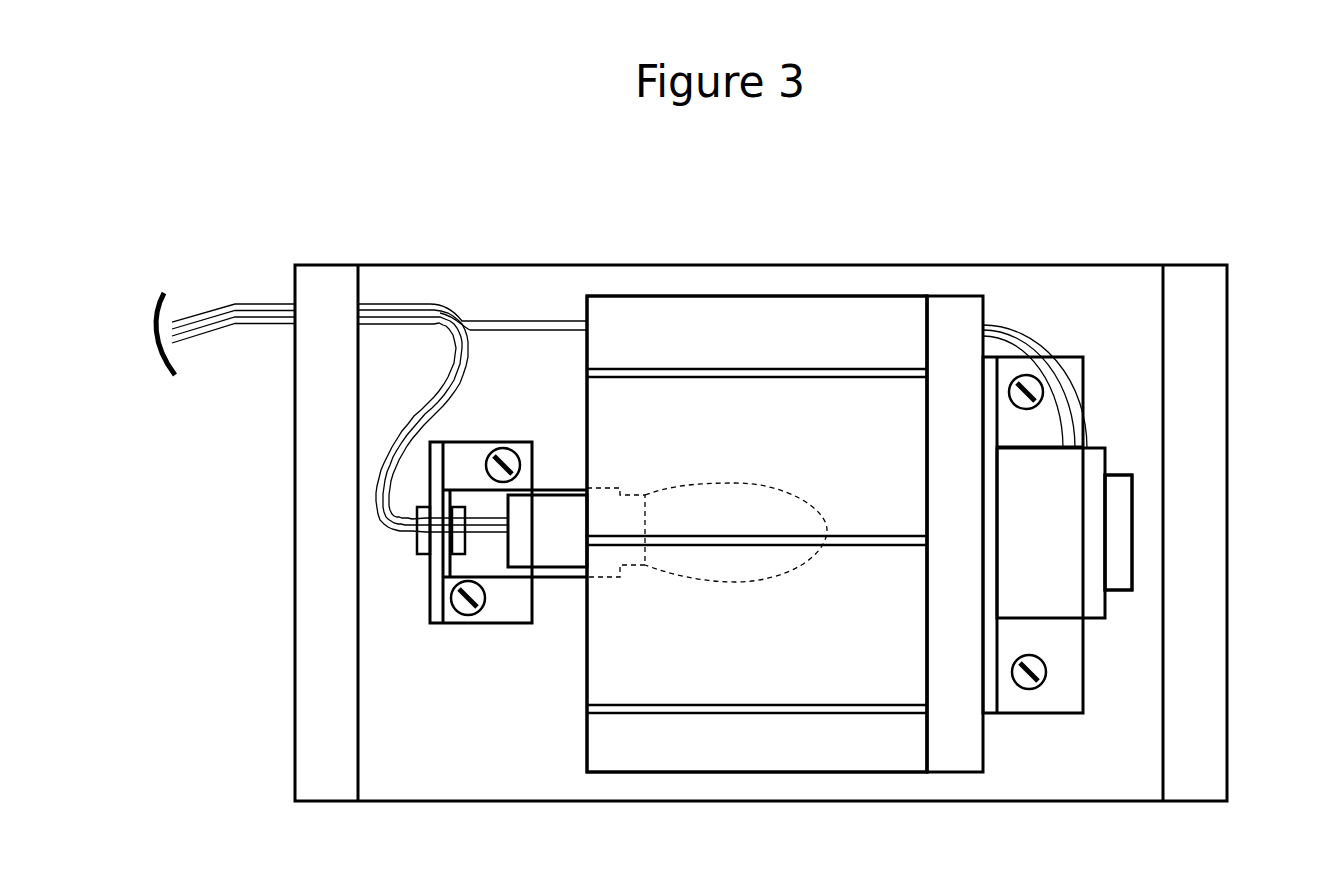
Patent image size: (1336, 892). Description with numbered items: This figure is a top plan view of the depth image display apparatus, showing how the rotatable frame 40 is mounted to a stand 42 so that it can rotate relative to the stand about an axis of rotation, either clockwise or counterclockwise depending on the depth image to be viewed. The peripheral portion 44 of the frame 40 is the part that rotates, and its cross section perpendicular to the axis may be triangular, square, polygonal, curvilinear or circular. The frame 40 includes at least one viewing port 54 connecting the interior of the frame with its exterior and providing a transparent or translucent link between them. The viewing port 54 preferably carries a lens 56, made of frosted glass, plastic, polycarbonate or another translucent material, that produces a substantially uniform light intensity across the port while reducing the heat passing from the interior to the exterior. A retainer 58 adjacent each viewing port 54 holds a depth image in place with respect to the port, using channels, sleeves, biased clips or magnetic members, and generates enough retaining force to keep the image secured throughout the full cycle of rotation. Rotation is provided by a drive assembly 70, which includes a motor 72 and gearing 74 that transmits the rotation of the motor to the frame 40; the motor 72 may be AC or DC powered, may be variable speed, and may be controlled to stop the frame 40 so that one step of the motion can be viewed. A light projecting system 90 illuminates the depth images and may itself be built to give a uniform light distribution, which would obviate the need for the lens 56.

The rotatable frame 40 is at (945, 297).
The stand 42 is at (295, 623).
The peripheral portion 44 is at (587, 296).
The viewing port 54 is at (573, 547).
The lens 56 is at (772, 434).
The retainer 58 is at (807, 358).
The drive assembly 70 is at (1132, 474).
The motor 72 is at (1113, 567).
The gearing 74 is at (1055, 598).
The light projecting system 90 is at (553, 486).